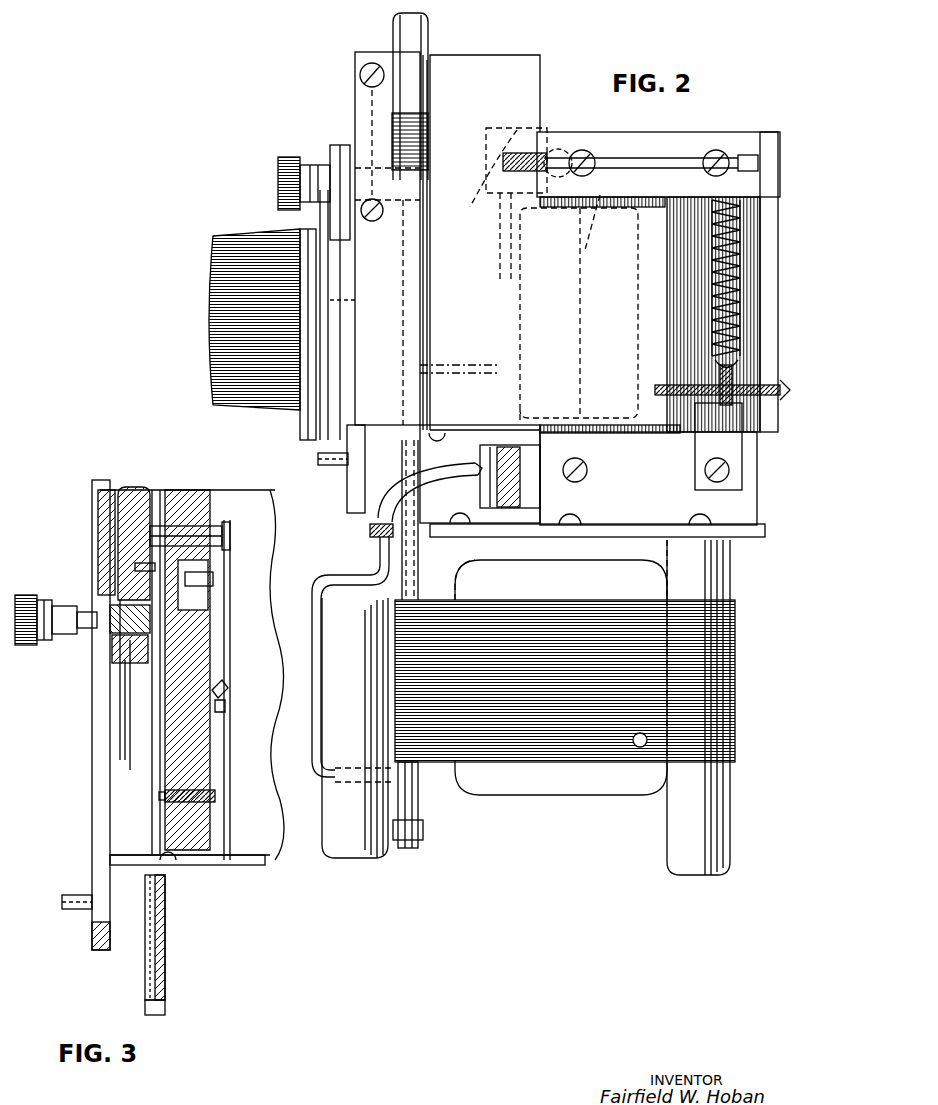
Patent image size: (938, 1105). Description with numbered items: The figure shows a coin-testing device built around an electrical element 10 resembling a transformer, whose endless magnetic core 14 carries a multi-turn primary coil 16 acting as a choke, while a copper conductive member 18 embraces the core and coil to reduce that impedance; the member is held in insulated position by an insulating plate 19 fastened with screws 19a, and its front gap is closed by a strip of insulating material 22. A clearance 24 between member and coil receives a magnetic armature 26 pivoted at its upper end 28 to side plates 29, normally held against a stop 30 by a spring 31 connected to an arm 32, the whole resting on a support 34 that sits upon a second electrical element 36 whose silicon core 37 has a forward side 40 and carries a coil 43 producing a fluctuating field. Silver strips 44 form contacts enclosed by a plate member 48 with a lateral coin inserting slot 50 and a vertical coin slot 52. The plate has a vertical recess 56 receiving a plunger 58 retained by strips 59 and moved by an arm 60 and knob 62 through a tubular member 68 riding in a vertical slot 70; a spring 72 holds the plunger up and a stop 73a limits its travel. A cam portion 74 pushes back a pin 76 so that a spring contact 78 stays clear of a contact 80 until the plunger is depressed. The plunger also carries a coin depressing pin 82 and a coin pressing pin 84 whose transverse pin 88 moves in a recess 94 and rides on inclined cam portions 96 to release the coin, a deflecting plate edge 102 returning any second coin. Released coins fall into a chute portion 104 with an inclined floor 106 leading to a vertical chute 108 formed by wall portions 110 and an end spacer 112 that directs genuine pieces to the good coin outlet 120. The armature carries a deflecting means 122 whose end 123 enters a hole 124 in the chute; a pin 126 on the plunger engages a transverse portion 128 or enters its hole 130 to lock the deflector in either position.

In FIG. 2, the electrical element 10 is at (566, 133).
In FIG. 2, the endless magnetic core 14 is at (745, 218).
In FIG. 2, the primary coil 16 is at (610, 182).
In FIG. 2, the conductive member 18 is at (478, 63).
In FIG. 2, the insulating plate 19 is at (768, 285).
In FIG. 2, the screws 19a is at (755, 247).
In FIG. 3, the strip of insulating material 22 is at (182, 866).
In FIG. 2, the clearance 24 is at (535, 140).
In FIG. 2, the magnetic armature 26 is at (482, 300).
In FIG. 2, the upper end of armature 28 is at (578, 150).
In FIG. 2, the side plates 29 is at (665, 148).
In FIG. 2, the stop 30 is at (470, 372).
In FIG. 3, the stop 30 is at (212, 792).
In FIG. 2, the spring 31 is at (735, 323).
In FIG. 2, the arm 32 is at (684, 163).
In FIG. 2, the support 34 is at (765, 530).
In FIG. 2, the second electrical element 36 is at (716, 688).
In FIG. 2, the silicon core 37 is at (715, 722).
In FIG. 2, the forward side of core 40 is at (338, 650).
In FIG. 2, the coil 43 is at (556, 790).
In FIG. 3, the silver strips 44 is at (80, 800).
In FIG. 2, the plate member 48 is at (356, 410).
In FIG. 3, the plate member 48 is at (100, 530).
In FIG. 2, the lateral coin inserting slot 50 is at (425, 32).
In FIG. 3, the vertical coin slot 52 is at (158, 765).
In FIG. 3, the vertical recess 56 is at (146, 742).
In FIG. 3, the plunger 58 is at (125, 560).
In FIG. 3, the strips 59 is at (140, 812).
In FIG. 2, the arm 60 is at (328, 152).
In FIG. 2, the knob 62 is at (263, 398).
In FIG. 3, the tubular member 68 is at (78, 622).
In FIG. 3, the vertical slot 70 is at (120, 705).
In FIG. 3, the spring 72 is at (108, 638).
In FIG. 2, the stop 73a is at (330, 467).
In FIG. 3, the stop 73a is at (75, 910).
In FIG. 3, the cam portion 74 is at (132, 500).
In FIG. 3, the pin 76 is at (196, 540).
In FIG. 3, the spring contact 78 is at (231, 612).
In FIG. 3, the contact 80 is at (212, 572).
In FIG. 3, the coin depressing pin 82 is at (122, 545).
In FIG. 3, the coin pressing pin 84 is at (120, 660).
In FIG. 2, the transverse pin 88 is at (345, 165).
In FIG. 3, the recess 94 is at (96, 792).
In FIG. 3, the inclined cam portions 96 is at (92, 895).
In FIG. 3, the upwardly inclined lower edge 102 is at (150, 585).
In FIG. 2, the chute portion 104 is at (410, 548).
In FIG. 3, the chute portion 104 is at (158, 937).
In FIG. 3, the inclined floor 106 is at (152, 992).
In FIG. 2, the vertical chute 108 is at (422, 826).
In FIG. 2, the wall portions 110 is at (412, 786).
In FIG. 2, the end spacer 112 is at (406, 848).
In FIG. 2, the good coin outlet 120 is at (406, 806).
In FIG. 2, the deflecting means 122 is at (313, 640).
In FIG. 2, the end of deflecting means 123 is at (328, 778).
In FIG. 2, the hole 124 is at (424, 775).
In FIG. 2, the pin 126 is at (375, 328).
In FIG. 3, the pin 126 is at (120, 722).
In FIG. 2, the transverse portion 128 is at (370, 530).
In FIG. 2, the hole 130 is at (392, 528).